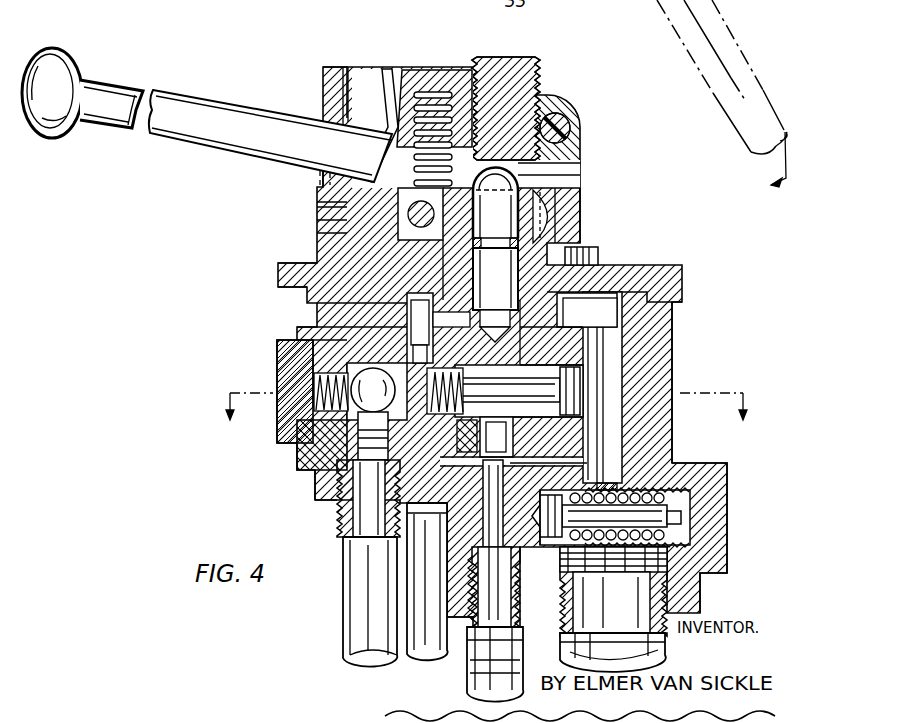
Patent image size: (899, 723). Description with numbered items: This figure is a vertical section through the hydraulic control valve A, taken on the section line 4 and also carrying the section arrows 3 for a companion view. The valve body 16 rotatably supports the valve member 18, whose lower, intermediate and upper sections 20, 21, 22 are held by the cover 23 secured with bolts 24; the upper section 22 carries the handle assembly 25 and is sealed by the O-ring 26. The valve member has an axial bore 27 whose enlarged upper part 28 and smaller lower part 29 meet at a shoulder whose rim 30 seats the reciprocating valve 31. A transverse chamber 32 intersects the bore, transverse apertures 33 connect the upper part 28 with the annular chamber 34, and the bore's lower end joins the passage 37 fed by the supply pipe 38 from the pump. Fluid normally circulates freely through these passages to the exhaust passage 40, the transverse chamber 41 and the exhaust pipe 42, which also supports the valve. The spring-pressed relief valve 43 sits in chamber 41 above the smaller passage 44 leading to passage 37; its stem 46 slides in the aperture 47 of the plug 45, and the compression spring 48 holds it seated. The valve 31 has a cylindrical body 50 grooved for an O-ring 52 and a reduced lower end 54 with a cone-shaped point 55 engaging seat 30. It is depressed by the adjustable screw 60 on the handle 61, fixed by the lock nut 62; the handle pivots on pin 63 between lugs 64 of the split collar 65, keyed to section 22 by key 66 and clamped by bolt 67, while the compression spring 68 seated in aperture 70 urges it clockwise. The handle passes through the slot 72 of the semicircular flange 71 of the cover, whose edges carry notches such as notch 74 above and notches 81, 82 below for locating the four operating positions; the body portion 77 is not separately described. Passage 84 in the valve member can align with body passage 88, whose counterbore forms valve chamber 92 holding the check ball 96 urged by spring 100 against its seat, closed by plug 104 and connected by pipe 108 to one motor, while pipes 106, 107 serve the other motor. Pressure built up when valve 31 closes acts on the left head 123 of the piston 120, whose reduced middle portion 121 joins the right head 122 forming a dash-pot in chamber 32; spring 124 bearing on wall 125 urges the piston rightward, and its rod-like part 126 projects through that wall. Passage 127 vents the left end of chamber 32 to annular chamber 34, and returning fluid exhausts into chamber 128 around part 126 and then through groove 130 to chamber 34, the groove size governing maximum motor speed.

The valve A is at (683, 266).
The section line 3 is at (484, 417).
The section line 4 is at (722, 101).
The valve body 16 is at (673, 316).
The valve member 18 is at (605, 440).
The lower cylindrical section 20 is at (440, 450).
The intermediate cylindrical section 21 is at (587, 310).
The upper cylindrical section 22 is at (581, 228).
The cover 23 is at (640, 276).
The bolts 24 is at (592, 250).
The handle assembly 25 is at (212, 143).
The O-ring 26 is at (512, 270).
The central axial bore 27 is at (551, 329).
The upper part of the bore 28 is at (534, 326).
The lower part of the bore 29 is at (511, 449).
The valve seat 30 is at (438, 349).
The vertically reciprocating valve 31 is at (577, 168).
The transverse chamber 32 is at (551, 351).
The transverse apertures 33 is at (438, 323).
The annular chamber 34 is at (337, 308).
The passage 37 is at (478, 489).
The supply pipe 38 is at (476, 655).
The exhaust passage 40 is at (618, 456).
The transverse chamber 41 is at (605, 572).
The exhaust pipe 42 is at (666, 648).
The relief valve 43 is at (560, 552).
The passage 44 is at (548, 504).
The plug 45 is at (728, 492).
The valve stem 46 is at (694, 548).
The aperture 47 is at (692, 537).
The compression spring 48 is at (590, 477).
The cylindrical body 50 is at (480, 178).
The O-ring 52 is at (495, 221).
The lower end 54 is at (497, 315).
The cone-shaped point 55 is at (451, 319).
The adjustable screw 60 is at (522, 60).
The handle 61 is at (195, 106).
The lock nut 62 is at (467, 76).
The pin 63 is at (556, 112).
The upstanding lugs 64 is at (572, 142).
The split collar-like member 65 is at (560, 196).
The key 66 is at (580, 208).
The bolt 67 is at (398, 236).
The compression spring 68 is at (410, 180).
The aperture 70 is at (393, 82).
The flange-like portion 71 is at (323, 78).
The slot 72 is at (316, 196).
The notch 74 is at (352, 80).
The body 77 is at (428, 300).
The notch 81 is at (317, 252).
The notch 82 is at (316, 216).
The passage 84 is at (496, 437).
The passage 88 is at (368, 498).
The valve chamber 92 is at (318, 474).
The ball 96 is at (312, 468).
The compression spring 100 is at (310, 384).
The plug 104 is at (300, 442).
The pipe 106 is at (476, 690).
The pipe 107 is at (412, 620).
The pipe 108 is at (345, 590).
The piston 120 is at (596, 384).
The reduced middle portion 121 is at (548, 427).
The right-hand piston head 122 is at (586, 396).
The left-hand piston head 123 is at (466, 437).
The compression spring 124 is at (403, 436).
The wall 125 is at (368, 365).
The rod-like part 126 is at (381, 406).
The small passage 127 is at (353, 326).
The chamber 128 is at (373, 390).
The vertical groove 130 is at (343, 338).